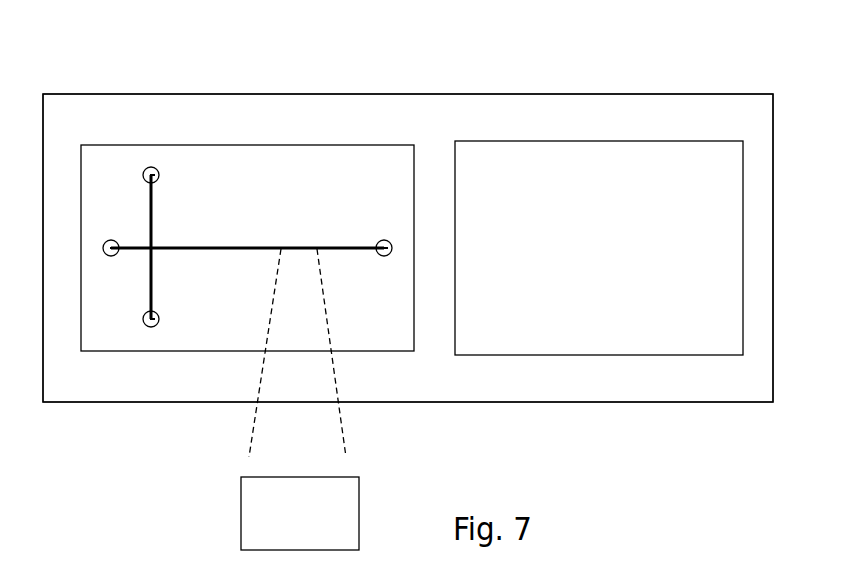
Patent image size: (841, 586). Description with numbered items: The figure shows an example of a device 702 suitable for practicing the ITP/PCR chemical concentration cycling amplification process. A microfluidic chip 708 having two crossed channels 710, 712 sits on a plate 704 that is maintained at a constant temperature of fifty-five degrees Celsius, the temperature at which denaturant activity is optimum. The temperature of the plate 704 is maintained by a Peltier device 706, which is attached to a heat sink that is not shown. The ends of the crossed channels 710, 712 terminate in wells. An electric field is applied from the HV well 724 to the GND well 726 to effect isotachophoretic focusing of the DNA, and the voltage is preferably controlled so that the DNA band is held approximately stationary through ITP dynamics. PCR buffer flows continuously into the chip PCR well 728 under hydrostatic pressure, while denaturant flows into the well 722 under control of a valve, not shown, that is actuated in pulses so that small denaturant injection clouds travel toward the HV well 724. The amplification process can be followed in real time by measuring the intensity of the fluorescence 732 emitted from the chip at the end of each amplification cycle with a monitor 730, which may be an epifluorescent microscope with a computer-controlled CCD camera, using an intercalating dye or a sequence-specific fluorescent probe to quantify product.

The device 702 is at (132, 49).
The plate 704 is at (159, 385).
The Peltier device 706 is at (616, 259).
The microfluidic chip 708 is at (312, 185).
The channel 710 is at (342, 247).
The channel 712 is at (152, 233).
The well 722 is at (160, 172).
The HV well 724 is at (390, 257).
The GND well 726 is at (160, 322).
The chip PCR well 728 is at (110, 257).
The monitor 730 is at (320, 527).
The fluorescence 732 is at (343, 433).